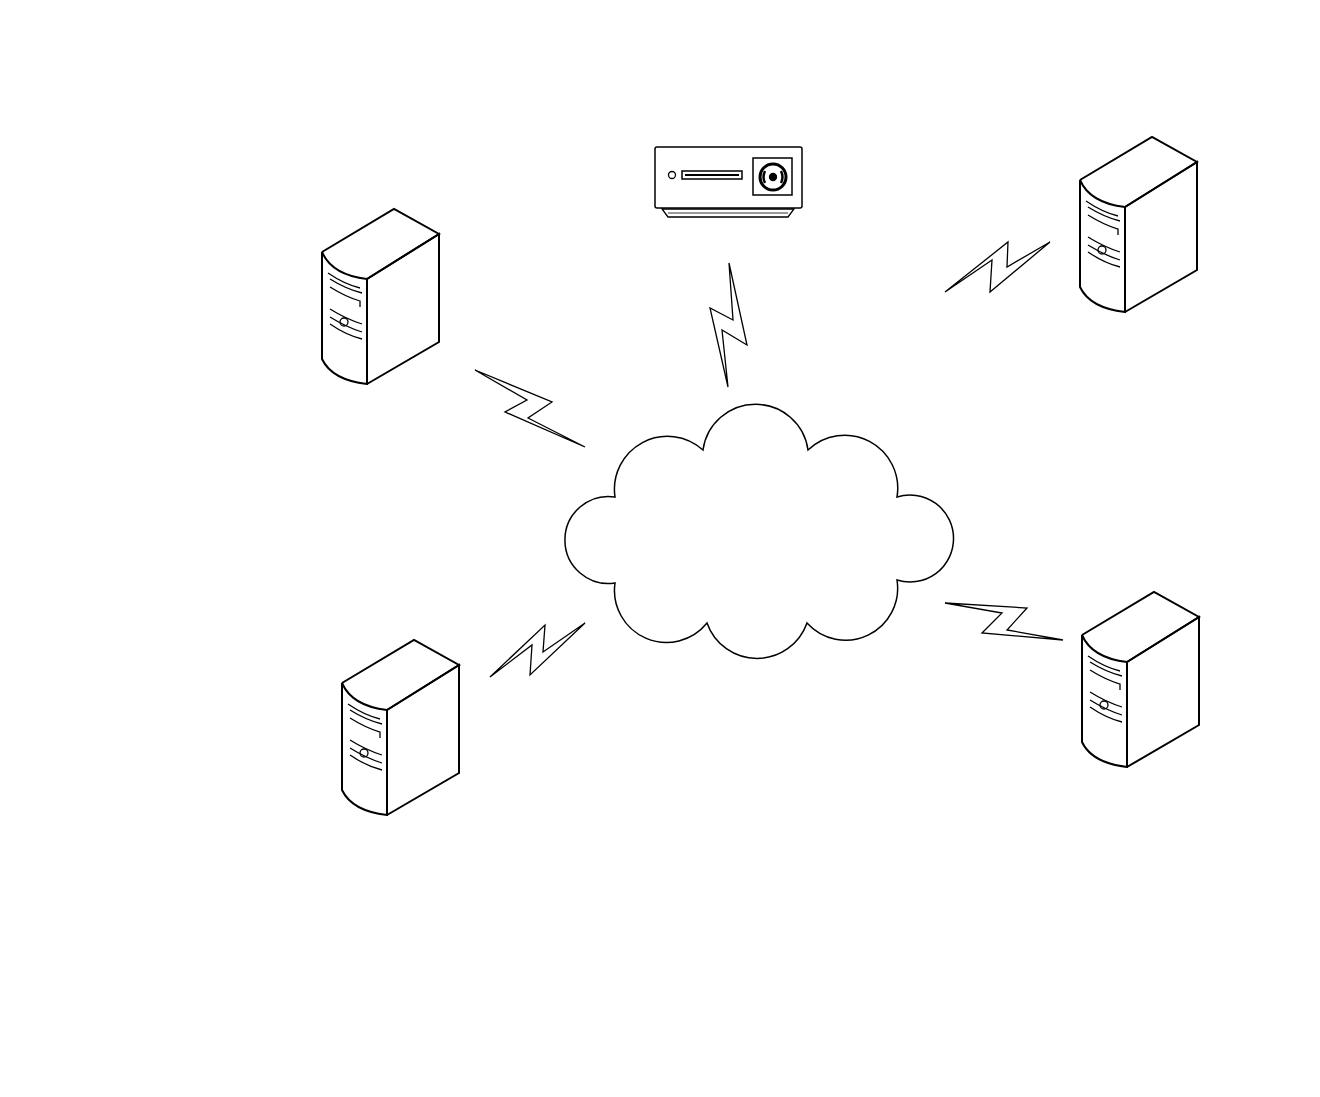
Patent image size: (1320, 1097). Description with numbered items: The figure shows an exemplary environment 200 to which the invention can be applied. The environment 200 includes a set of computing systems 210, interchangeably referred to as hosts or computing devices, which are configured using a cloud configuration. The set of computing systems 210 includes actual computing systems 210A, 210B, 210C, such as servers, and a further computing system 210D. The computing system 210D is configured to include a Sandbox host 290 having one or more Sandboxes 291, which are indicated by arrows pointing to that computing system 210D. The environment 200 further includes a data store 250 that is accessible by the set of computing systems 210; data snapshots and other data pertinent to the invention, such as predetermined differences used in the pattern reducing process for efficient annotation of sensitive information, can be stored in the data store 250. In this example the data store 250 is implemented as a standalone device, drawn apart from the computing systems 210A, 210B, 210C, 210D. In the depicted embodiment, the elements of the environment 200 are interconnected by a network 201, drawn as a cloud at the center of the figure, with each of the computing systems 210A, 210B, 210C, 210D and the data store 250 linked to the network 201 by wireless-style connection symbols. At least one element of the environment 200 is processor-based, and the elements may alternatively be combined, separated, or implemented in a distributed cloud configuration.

The environment 200 is at (240, 85).
The set of computing systems 210 is at (257, 130).
The computing system 210A is at (380, 296).
The computing system 210B is at (400, 727).
The computing system 210C is at (1138, 224).
The computing system 210D is at (1140, 679).
The network 201 is at (735, 544).
The data store 250 is at (718, 130).
The Sandbox host 290 is at (1182, 563).
The Sandbox 291 is at (1198, 595).